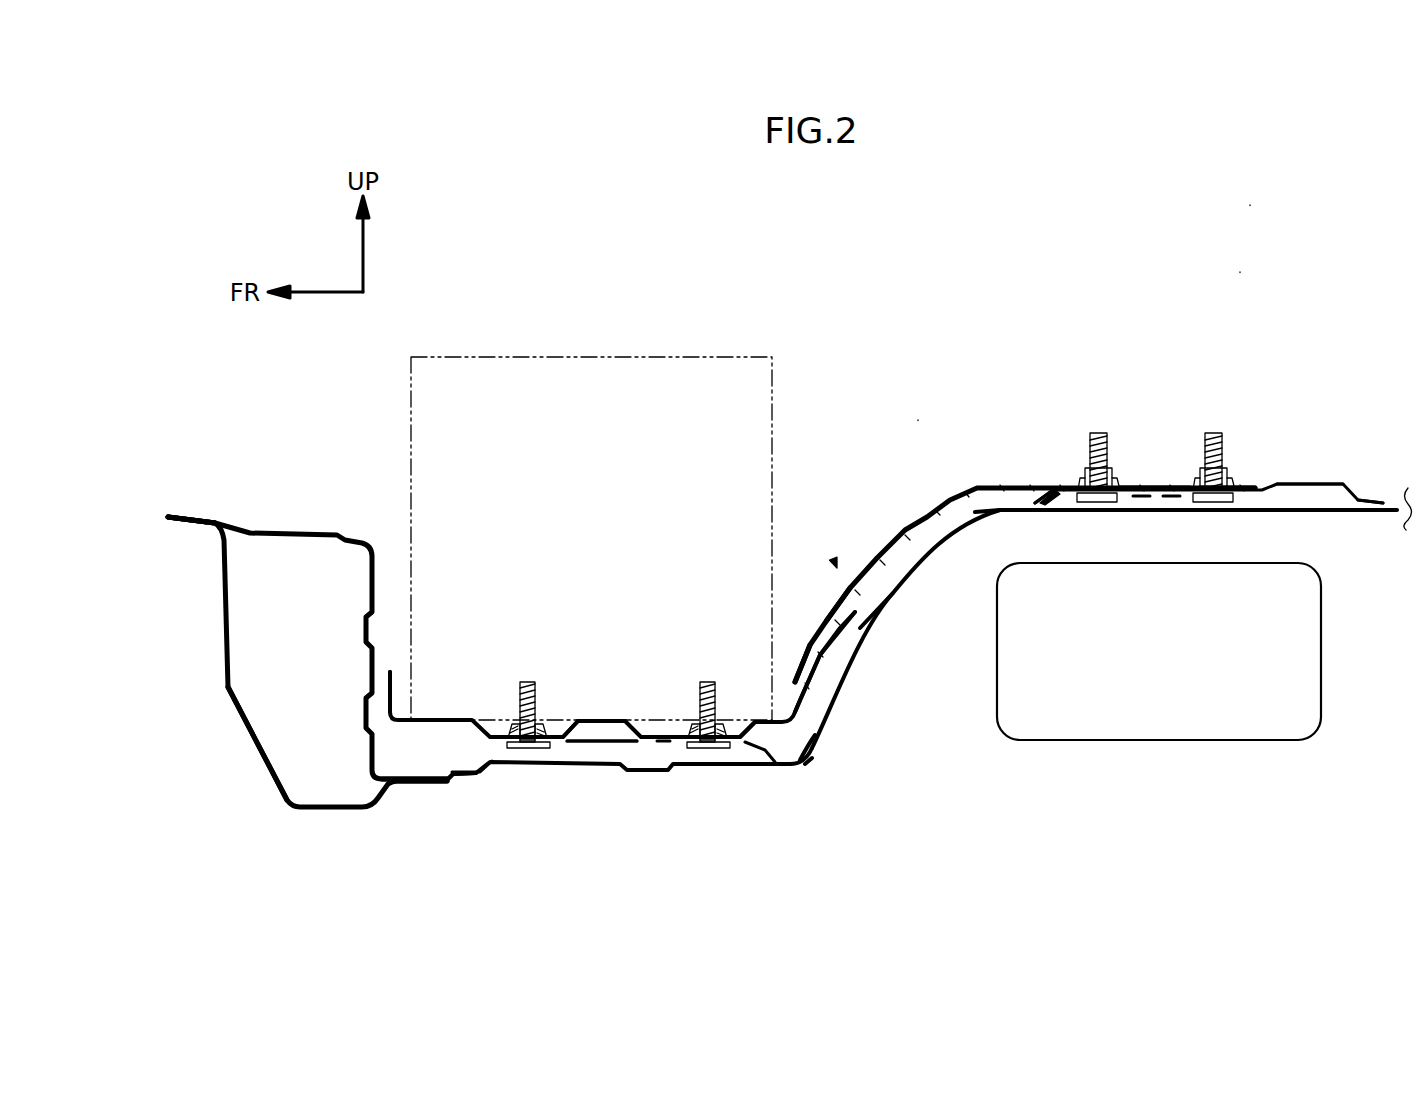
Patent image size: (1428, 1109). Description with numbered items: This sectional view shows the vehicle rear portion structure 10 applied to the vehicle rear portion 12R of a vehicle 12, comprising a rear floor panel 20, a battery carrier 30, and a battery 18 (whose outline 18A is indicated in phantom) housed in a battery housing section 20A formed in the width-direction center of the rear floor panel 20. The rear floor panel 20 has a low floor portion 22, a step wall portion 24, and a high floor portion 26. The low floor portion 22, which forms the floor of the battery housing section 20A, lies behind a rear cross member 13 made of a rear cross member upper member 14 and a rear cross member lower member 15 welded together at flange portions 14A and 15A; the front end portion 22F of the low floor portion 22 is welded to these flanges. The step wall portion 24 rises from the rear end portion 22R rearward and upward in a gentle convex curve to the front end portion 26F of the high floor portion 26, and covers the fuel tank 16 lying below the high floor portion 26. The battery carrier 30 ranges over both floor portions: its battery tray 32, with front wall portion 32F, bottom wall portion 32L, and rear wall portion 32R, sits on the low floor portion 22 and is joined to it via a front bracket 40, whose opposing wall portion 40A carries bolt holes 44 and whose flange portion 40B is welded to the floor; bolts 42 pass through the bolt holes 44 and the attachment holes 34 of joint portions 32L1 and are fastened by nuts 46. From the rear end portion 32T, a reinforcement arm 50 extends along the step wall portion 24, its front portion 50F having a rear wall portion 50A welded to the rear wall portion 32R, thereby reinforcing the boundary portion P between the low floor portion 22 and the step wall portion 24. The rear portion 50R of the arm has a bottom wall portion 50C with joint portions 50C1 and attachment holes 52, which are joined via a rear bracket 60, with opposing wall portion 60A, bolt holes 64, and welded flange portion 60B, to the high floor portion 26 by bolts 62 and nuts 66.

The vehicle rear portion structure 10 is at (919, 410).
The vehicle 12 is at (1256, 197).
The vehicle rear portion 12R is at (1246, 264).
The rear cross member 13 is at (235, 734).
The rear cross member upper member 14 is at (295, 533).
The flange portion 14A is at (195, 518).
The rear cross member lower member 15 is at (222, 637).
The flange portion 15A is at (197, 525).
The fuel tank 16 is at (1170, 742).
The battery 18 is at (695, 348).
The seat lower surface 18A is at (608, 355).
The rear floor panel 20 is at (904, 572).
The battery housing section 20A is at (818, 468).
The low floor portion 22 is at (595, 772).
The front end portion 22F is at (465, 786).
The rear end portion 22R is at (763, 780).
The step wall portion 24 is at (858, 624).
The high floor portion 26 is at (1228, 512).
The front end portion 26F is at (985, 512).
The battery carrier 30 is at (833, 558).
The battery tray 32 is at (658, 745).
The front wall portion 32F is at (385, 690).
The bottom wall portion 32L is at (604, 720).
The joint portion 32L1 is at (569, 725).
The rear wall portion 32R is at (797, 703).
The rear end portion 32T is at (810, 740).
The attachment hole 34 is at (538, 720).
The front bracket 40 is at (569, 750).
The opposing wall portion 40A is at (606, 746).
The flange portion 40B is at (440, 782).
The bolt 42 is at (520, 690).
The bolt hole 44 is at (525, 752).
The nut 46 is at (512, 733).
The reinforcement arm 50 is at (981, 477).
The rear wall portion 50A is at (820, 640).
The bottom wall portion 50C is at (1152, 488).
The joint portion 50C1 is at (1060, 500).
The front portion 50F is at (806, 627).
The rear portion 50R is at (1109, 408).
The attachment hole 52 is at (1088, 470).
The rear bracket 60 is at (1336, 473).
The opposing wall portion 60A is at (1300, 482).
The flange portion 60B is at (1038, 500).
The bolt 62 is at (1096, 432).
The bolt hole 64 is at (1100, 503).
The nut 66 is at (1114, 480).
The boundary portion P is at (810, 762).